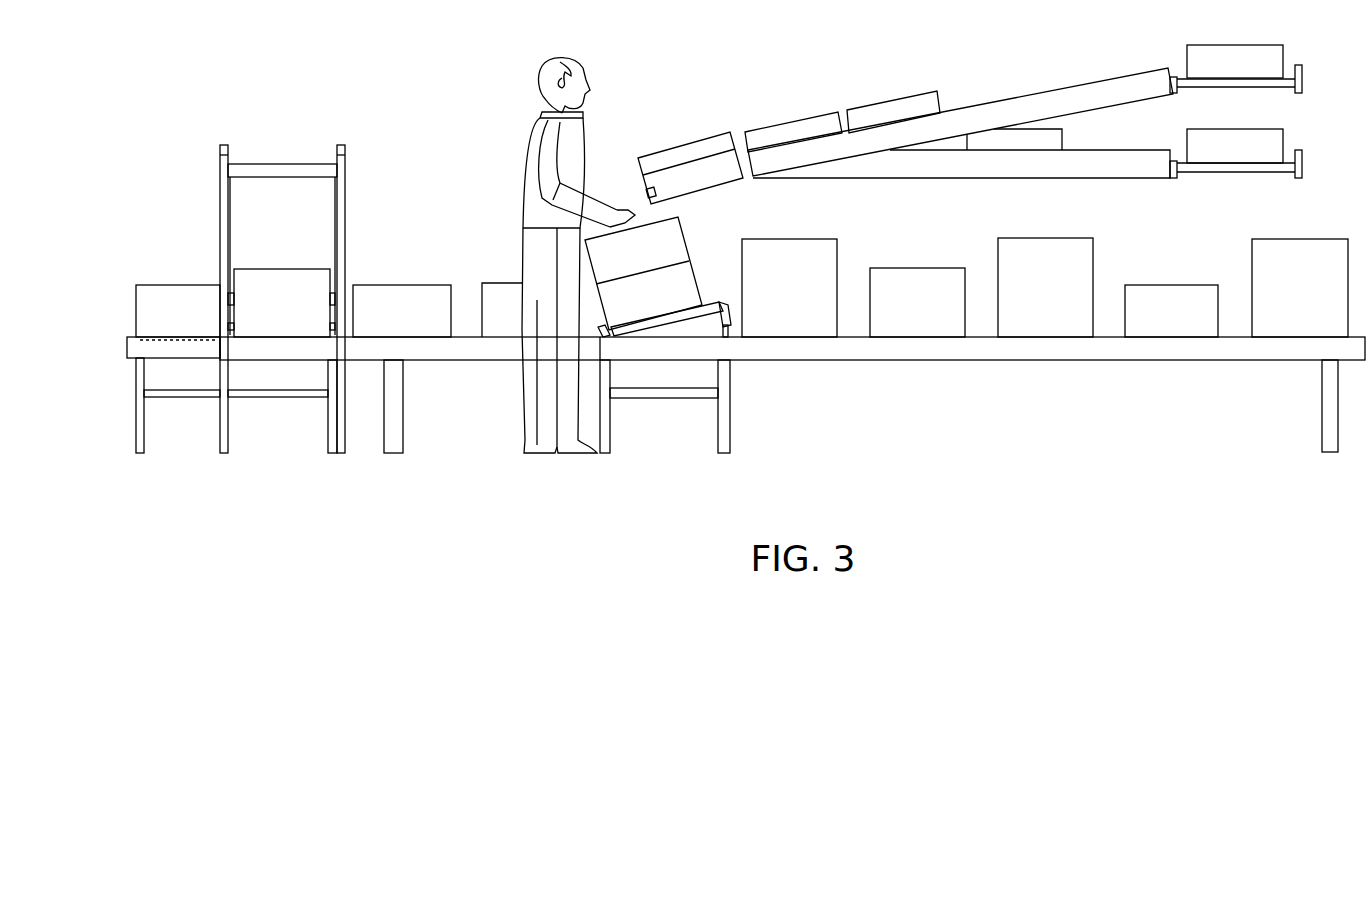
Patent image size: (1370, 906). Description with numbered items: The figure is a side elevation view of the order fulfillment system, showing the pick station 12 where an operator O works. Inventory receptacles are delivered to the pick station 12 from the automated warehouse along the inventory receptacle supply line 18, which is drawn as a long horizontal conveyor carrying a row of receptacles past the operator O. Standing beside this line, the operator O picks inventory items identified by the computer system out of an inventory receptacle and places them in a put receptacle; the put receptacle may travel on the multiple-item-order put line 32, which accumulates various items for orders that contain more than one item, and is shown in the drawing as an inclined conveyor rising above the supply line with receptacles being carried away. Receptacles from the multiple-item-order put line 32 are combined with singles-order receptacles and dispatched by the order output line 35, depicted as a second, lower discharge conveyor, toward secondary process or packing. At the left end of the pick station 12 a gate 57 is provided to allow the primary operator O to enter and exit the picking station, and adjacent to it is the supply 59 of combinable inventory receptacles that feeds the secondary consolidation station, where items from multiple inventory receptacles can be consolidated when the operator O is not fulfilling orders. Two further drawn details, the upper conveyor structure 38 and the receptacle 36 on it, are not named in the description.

The pick station 12 is at (910, 482).
The inventory receptacle supply line 18 is at (995, 353).
The supply of combinable inventory receptacles 59 is at (453, 352).
The gate 57 is at (347, 208).
The operator O is at (527, 140).
The inclined conveyor 38 is at (1025, 106).
The box on upper discharge 36 is at (1300, 72).
The order output line 35 is at (1300, 157).
The multiple-item-order put line 32 is at (678, 140).